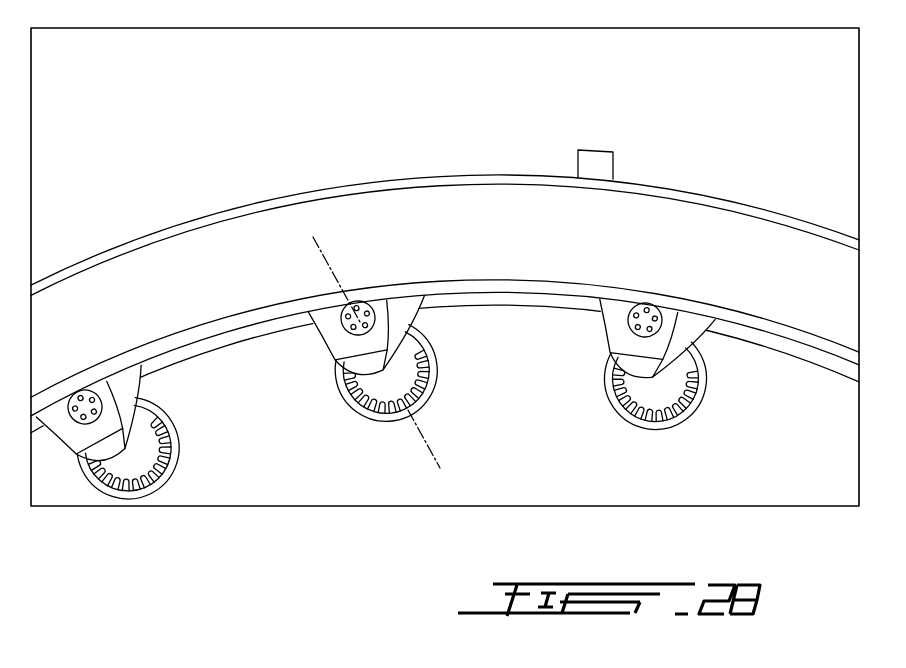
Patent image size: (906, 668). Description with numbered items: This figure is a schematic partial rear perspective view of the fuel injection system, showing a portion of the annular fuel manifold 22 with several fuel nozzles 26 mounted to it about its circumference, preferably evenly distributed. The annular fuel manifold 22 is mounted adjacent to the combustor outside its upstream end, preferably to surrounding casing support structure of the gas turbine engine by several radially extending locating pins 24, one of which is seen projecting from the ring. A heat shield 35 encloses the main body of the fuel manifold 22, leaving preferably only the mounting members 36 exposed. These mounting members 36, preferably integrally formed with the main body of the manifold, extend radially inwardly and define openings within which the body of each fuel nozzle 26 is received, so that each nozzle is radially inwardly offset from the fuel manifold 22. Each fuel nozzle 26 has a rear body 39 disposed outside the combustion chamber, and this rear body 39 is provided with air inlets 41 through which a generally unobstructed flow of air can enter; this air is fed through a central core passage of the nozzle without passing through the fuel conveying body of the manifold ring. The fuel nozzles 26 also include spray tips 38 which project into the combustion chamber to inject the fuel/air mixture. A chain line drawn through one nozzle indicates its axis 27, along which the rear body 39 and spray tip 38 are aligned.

The annular fuel manifold 22 is at (445, 222).
The locating pin 24 is at (598, 151).
The fuel nozzle 26 is at (381, 411).
The roller axis 27 is at (432, 443).
The heat shield 35 is at (807, 283).
The mounting member 36 is at (340, 343).
The spray tip 38 is at (445, 366).
The rear body 39 is at (648, 277).
The air inlet 41 is at (656, 309).